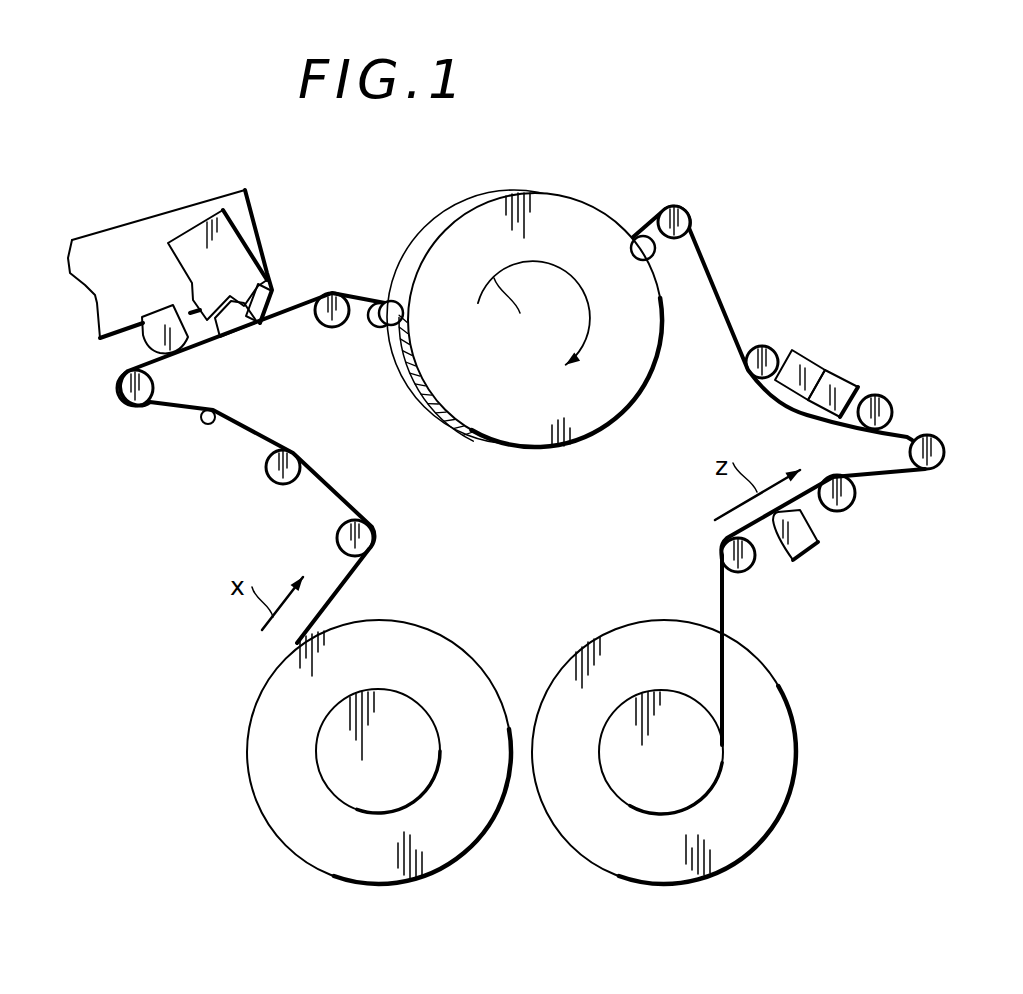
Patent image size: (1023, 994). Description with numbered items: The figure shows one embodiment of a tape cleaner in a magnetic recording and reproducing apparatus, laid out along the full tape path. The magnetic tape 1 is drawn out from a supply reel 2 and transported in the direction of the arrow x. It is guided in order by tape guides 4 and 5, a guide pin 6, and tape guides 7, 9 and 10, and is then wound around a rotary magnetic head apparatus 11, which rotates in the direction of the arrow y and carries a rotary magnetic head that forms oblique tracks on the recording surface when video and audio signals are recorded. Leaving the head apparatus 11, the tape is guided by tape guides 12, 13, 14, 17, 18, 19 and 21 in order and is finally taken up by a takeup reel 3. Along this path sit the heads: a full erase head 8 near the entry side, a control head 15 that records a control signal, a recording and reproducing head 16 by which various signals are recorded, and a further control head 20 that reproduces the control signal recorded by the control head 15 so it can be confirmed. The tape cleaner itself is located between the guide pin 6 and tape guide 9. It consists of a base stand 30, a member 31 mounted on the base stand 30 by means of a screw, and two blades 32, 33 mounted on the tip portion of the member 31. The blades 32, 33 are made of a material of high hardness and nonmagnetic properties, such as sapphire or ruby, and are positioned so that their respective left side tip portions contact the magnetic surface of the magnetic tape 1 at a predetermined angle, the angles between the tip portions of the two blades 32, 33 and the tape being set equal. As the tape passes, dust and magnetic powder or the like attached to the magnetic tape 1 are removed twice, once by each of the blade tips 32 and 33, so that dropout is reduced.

The magnetic tape 1 is at (726, 594).
The supply reel 2 is at (491, 823).
The takeup reel 3 is at (775, 824).
The tape guide 4 is at (338, 536).
The tape guide 5 is at (267, 465).
The guide pin 6 is at (208, 424).
The tape guide 7 is at (124, 402).
The full erase head 8 is at (157, 313).
The tape guide 9 is at (338, 326).
The tape guide 10 is at (387, 300).
The rotary magnetic head apparatus 11 is at (603, 424).
The tape guide 12 is at (648, 259).
The tape guide 13 is at (681, 204).
The tape guide 14 is at (764, 338).
The control head (CTL) 15 is at (803, 351).
The recording/reproducing head 16 is at (834, 373).
The tape guide 17 is at (883, 394).
The tape guide 18 is at (940, 464).
The tape guide 19 is at (853, 507).
The control head (CTL) for recording confirmation 20 is at (807, 551).
The tape guide 21 is at (756, 567).
The base stand 30 is at (248, 192).
The member 31 is at (262, 276).
The blade 32 is at (230, 328).
The blade 33 is at (270, 320).